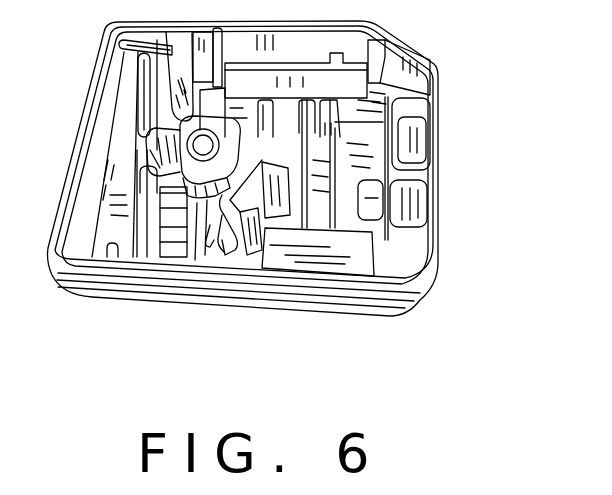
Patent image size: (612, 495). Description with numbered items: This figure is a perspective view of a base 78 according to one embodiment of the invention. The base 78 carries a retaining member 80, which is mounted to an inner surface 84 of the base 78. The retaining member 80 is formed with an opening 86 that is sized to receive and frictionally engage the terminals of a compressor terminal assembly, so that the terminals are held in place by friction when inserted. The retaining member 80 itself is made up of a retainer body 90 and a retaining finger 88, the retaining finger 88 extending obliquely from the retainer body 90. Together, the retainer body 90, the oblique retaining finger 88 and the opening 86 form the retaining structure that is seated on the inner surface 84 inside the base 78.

The base 78 is at (437, 270).
The retaining member 80 is at (206, 248).
The inner surface 84 is at (352, 254).
The opening 86 is at (250, 240).
The retaining finger 88 is at (209, 243).
The retainer body 90 is at (224, 252).